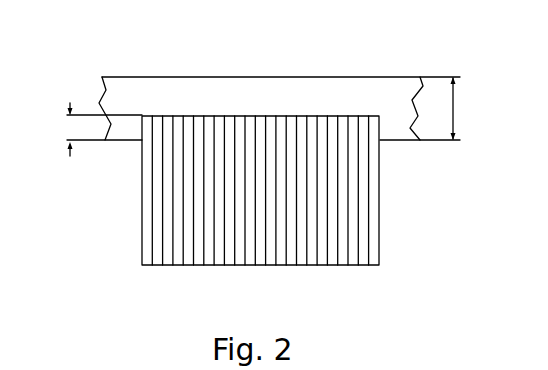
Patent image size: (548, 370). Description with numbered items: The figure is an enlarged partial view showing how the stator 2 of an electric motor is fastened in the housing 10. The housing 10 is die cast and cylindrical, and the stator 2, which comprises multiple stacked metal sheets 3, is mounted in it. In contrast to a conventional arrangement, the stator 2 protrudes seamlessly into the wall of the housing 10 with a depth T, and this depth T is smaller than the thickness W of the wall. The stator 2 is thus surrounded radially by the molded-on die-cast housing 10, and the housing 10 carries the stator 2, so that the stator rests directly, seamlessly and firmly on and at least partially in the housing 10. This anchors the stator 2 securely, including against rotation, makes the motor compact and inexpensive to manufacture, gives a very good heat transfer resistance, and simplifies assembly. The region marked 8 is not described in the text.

The stator 2 is at (231, 220).
The stacked metal sheets 3 is at (268, 266).
The layer 8 is at (263, 79).
The housing 10 is at (152, 74).
The depth T is at (68, 146).
The thickness of the wall W is at (455, 105).